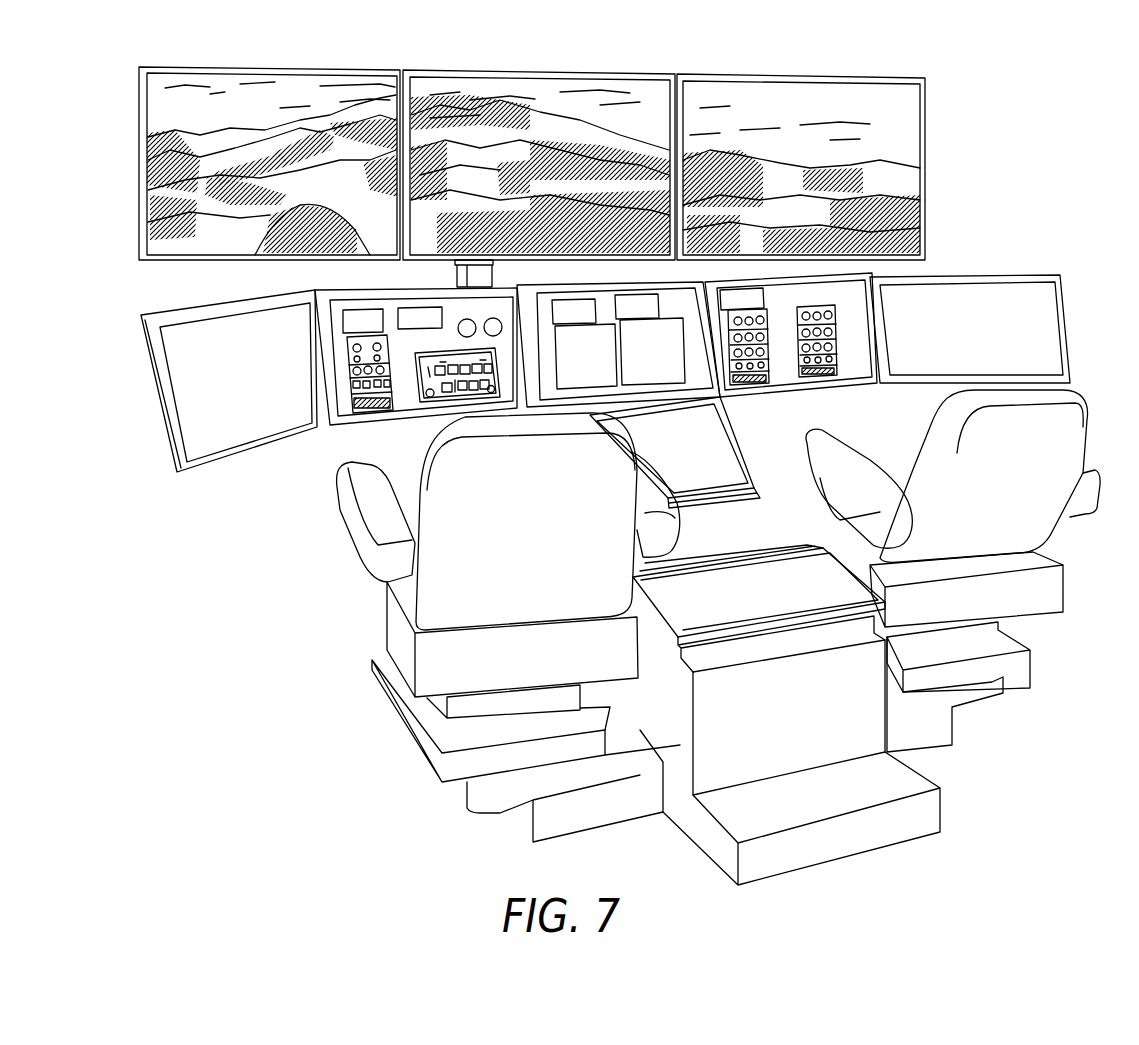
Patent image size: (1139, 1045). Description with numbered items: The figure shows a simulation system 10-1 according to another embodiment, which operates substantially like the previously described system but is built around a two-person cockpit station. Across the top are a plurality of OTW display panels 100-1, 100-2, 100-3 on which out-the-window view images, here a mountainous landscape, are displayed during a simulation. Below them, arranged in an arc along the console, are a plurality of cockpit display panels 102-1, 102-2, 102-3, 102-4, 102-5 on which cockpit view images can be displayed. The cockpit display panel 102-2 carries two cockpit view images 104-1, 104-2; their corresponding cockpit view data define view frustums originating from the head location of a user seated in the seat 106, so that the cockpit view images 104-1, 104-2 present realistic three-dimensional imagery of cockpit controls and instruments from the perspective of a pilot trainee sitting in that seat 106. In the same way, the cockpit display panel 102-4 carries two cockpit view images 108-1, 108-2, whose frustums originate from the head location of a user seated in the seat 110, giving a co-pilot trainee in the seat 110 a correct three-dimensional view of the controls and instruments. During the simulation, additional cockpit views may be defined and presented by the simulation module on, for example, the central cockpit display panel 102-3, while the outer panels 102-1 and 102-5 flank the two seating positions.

The simulation system 10-1 is at (995, 48).
The OTW display panel 100-1 is at (277, 67).
The OTW display panel 100-2 is at (533, 75).
The OTW display panel 100-3 is at (797, 78).
The cockpit display panel 102-1 is at (255, 455).
The cockpit display panel 102-2 is at (420, 427).
The cockpit display panel 102-3 is at (677, 280).
The cockpit display panel 102-4 is at (833, 390).
The cockpit display panel 102-5 is at (1030, 277).
The cockpit view image 104-1 is at (350, 382).
The cockpit view image 104-2 is at (457, 350).
The seat 106 is at (543, 545).
The cockpit view image 108-1 is at (750, 385).
The cockpit view image 108-2 is at (840, 373).
The seat 110 is at (1032, 480).